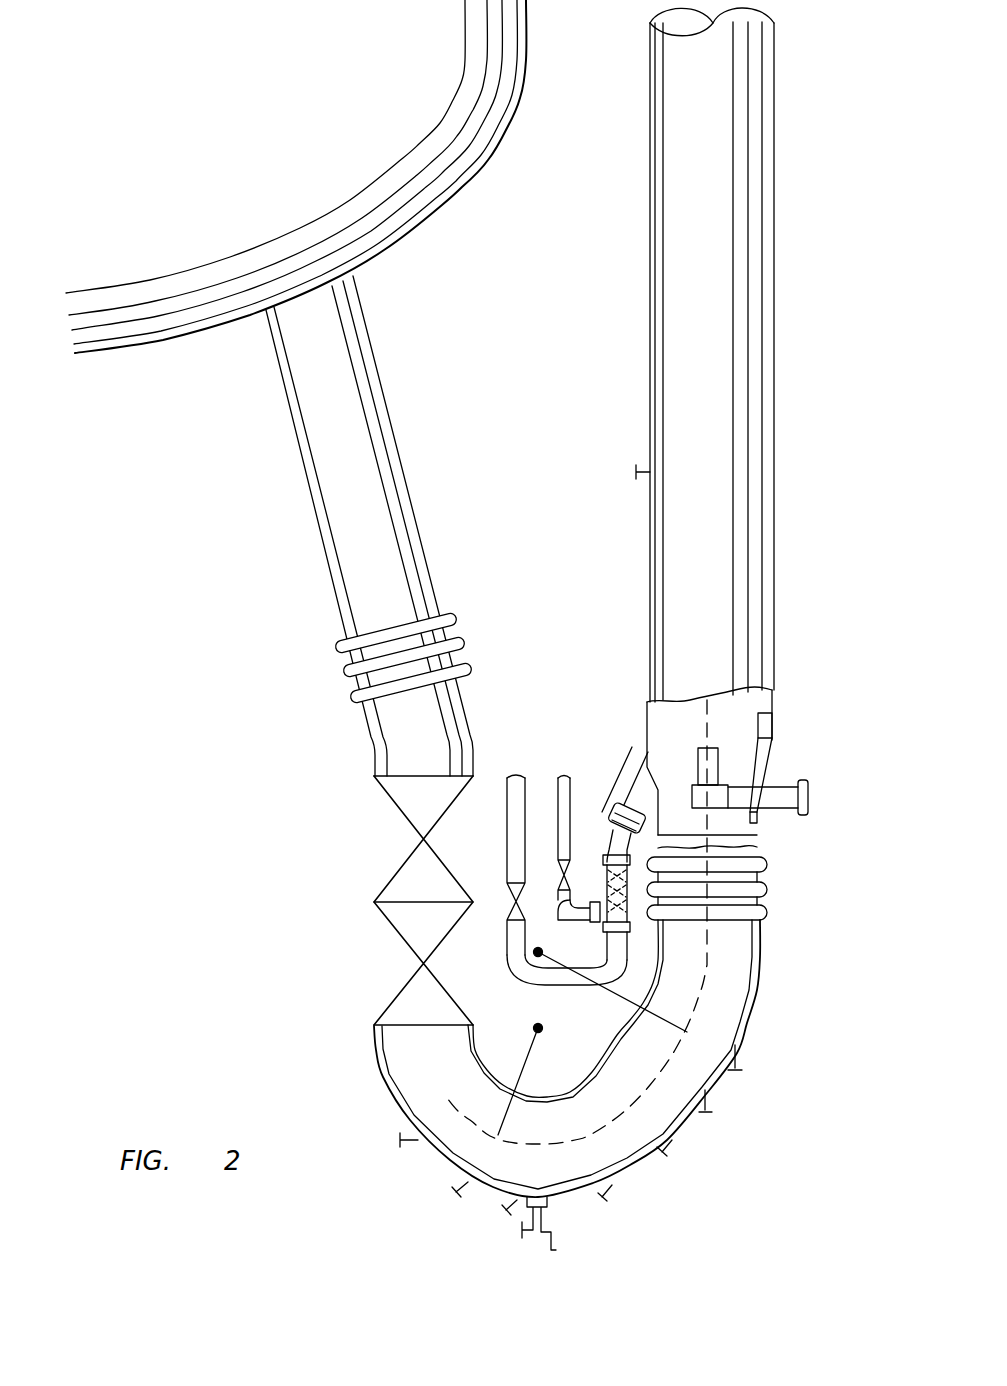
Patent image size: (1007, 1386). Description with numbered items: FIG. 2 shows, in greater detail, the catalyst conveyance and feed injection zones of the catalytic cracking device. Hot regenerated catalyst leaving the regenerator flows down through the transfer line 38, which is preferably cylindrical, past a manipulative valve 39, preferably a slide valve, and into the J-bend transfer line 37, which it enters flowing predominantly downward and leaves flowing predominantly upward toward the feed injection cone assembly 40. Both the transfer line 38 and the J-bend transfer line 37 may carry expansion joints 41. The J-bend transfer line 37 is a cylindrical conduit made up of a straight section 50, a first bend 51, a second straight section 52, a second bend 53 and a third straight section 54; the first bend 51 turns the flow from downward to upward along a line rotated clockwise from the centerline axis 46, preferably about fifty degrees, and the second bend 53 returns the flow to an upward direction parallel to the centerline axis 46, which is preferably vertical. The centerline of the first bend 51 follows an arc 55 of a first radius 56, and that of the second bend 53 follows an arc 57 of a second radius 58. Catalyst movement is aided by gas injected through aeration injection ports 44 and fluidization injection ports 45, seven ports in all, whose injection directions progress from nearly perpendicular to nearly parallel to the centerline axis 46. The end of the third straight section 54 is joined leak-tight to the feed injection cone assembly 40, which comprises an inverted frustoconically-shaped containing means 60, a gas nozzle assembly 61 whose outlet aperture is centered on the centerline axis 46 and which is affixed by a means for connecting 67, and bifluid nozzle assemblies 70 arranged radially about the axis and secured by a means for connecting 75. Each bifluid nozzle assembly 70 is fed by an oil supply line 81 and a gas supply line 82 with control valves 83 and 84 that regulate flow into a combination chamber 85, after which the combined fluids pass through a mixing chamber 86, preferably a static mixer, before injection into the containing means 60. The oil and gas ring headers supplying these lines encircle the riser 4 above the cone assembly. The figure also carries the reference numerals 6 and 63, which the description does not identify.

The riser 4 is at (776, 370).
The vessel wall 6 is at (479, 177).
The J-bend transfer line 37 is at (782, 1063).
The transfer line 38 is at (410, 481).
The manipulative valve 39 is at (395, 933).
The feed injection cone assembly 40 is at (775, 821).
The expansion joint 41 is at (345, 670).
The aeration injection port 44 is at (460, 1195).
The fluidization injection port 45 is at (740, 1072).
The centerline axis 46 is at (712, 742).
The straight section 50 is at (478, 1037).
The first bend 51 is at (543, 1095).
The second straight section 52 is at (612, 1052).
The second bend 53 is at (642, 1013).
The third straight section 54 is at (757, 952).
The arc 55 is at (513, 1143).
The first radius 56 is at (520, 1074).
The arc 57 is at (684, 1040).
The second radius 58 is at (611, 980).
The frustoconically-shaped containing means 60 is at (767, 772).
The gas nozzle assembly 61 is at (728, 772).
The flange 63 is at (765, 755).
The means for connecting 67 is at (758, 815).
The bifluid nozzle assembly 70 is at (622, 774).
The means for connecting 75 is at (645, 758).
The oil supply line 81 is at (510, 770).
The gas supply line 82 is at (563, 775).
The control valve 83 is at (508, 888).
The control valve 84 is at (588, 858).
The combination chamber 85 is at (630, 928).
The mixing chamber 86 is at (601, 893).